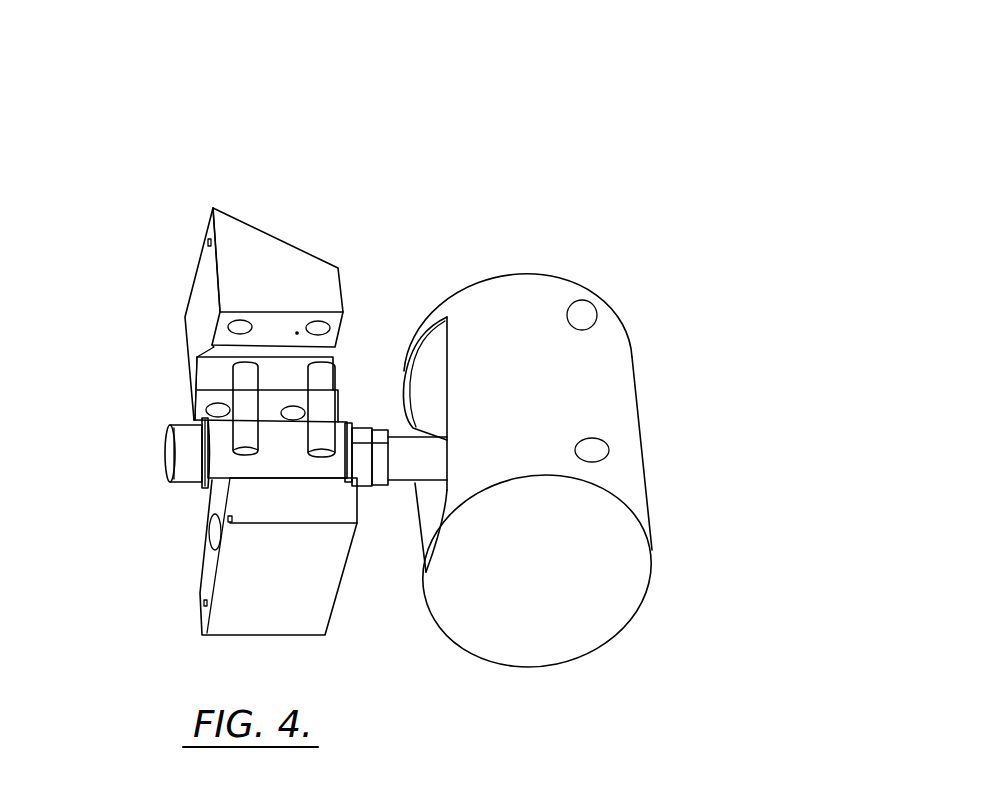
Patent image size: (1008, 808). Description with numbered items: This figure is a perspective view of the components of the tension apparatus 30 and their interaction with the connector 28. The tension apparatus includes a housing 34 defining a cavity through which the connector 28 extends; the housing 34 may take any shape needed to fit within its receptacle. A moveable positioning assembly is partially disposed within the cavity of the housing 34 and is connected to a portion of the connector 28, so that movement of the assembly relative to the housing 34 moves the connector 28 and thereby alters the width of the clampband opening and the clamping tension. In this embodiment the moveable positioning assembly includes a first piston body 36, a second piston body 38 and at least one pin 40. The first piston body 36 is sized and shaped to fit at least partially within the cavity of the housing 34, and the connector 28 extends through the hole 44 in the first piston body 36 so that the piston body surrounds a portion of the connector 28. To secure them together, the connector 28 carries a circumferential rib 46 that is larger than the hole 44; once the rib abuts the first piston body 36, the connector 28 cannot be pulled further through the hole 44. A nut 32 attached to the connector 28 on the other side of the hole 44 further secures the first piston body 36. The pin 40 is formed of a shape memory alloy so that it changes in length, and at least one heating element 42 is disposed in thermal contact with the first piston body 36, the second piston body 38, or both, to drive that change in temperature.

The connector 28 is at (167, 440).
The tension apparatus 30 is at (507, 448).
The nut 32 is at (370, 488).
The housing 34 is at (553, 273).
The first piston body 36 is at (218, 588).
The second piston body 38 is at (277, 215).
The pin 40 is at (373, 395).
The heating element 42 is at (198, 220).
The hole 44 is at (208, 542).
The circumferential rib 46 is at (193, 418).